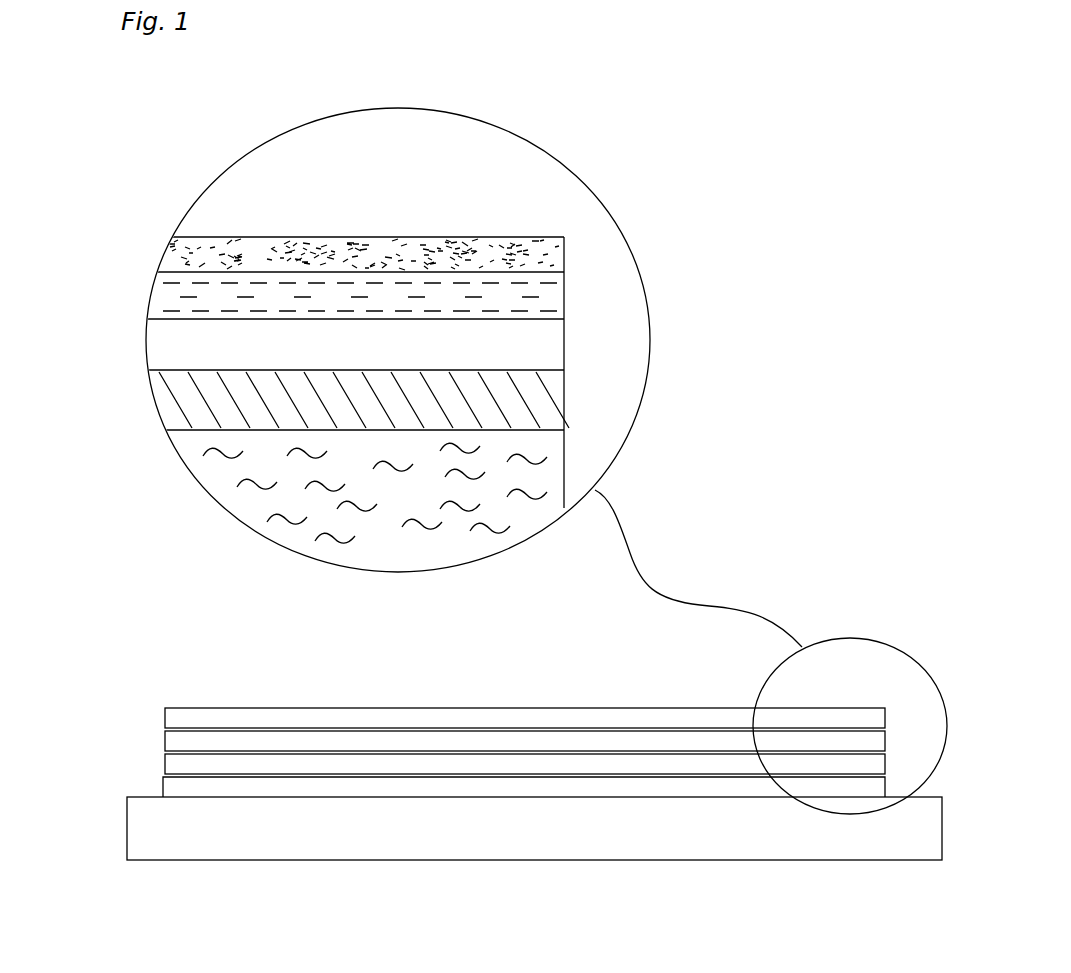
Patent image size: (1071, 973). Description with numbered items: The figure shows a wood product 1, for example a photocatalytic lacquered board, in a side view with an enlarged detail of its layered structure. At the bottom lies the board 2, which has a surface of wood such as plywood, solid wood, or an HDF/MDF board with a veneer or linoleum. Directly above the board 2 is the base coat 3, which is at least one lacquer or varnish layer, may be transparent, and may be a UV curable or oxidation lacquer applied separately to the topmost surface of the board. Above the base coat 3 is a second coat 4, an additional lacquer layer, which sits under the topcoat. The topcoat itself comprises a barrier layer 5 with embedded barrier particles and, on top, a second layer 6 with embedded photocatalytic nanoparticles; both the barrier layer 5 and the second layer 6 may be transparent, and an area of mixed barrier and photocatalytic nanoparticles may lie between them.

The wood product 1 is at (143, 745).
The board 2 is at (564, 472).
The base coat 3 is at (564, 415).
The second coat 4 is at (564, 355).
The barrier layer 5 is at (564, 299).
The second layer 6 is at (564, 257).